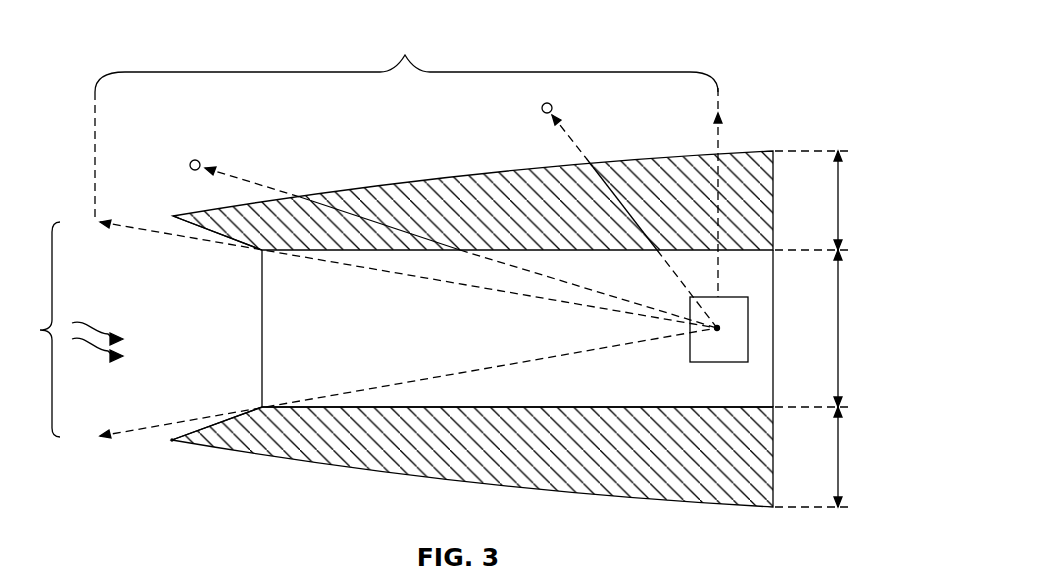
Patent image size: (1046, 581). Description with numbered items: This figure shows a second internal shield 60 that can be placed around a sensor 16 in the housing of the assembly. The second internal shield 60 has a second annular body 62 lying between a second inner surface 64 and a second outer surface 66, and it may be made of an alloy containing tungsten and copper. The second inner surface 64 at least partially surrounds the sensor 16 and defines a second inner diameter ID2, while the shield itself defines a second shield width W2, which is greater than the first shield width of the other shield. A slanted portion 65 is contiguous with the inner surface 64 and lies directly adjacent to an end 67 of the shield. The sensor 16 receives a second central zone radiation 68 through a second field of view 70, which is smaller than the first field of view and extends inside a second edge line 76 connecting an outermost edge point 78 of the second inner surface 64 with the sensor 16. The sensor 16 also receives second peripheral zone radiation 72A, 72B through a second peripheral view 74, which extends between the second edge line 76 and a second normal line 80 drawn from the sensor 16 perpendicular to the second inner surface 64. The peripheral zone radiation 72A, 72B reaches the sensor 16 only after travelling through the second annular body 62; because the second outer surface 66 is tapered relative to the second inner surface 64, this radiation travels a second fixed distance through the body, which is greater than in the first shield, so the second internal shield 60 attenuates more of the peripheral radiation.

The sensor 16 is at (748, 322).
The second internal shield 60 is at (511, 295).
The second annular body 62 is at (596, 468).
The second inner surface 64 is at (586, 404).
The slanted portion 65 is at (200, 227).
The second outer surface 66 is at (750, 140).
The end 67 is at (171, 439).
The second central zone radiation 68 is at (78, 322).
The second field of view 70 is at (32, 329).
The second peripheral zone radiation 72A is at (552, 104).
The second peripheral zone radiation 72B is at (200, 161).
The second peripheral view 74 is at (406, 121).
The second edge line 76 is at (405, 274).
The outermost edge point 78 is at (263, 252).
The second normal line 80 is at (718, 262).
The second shield width W2 is at (841, 200).
The second inner diameter ID2 is at (840, 322).